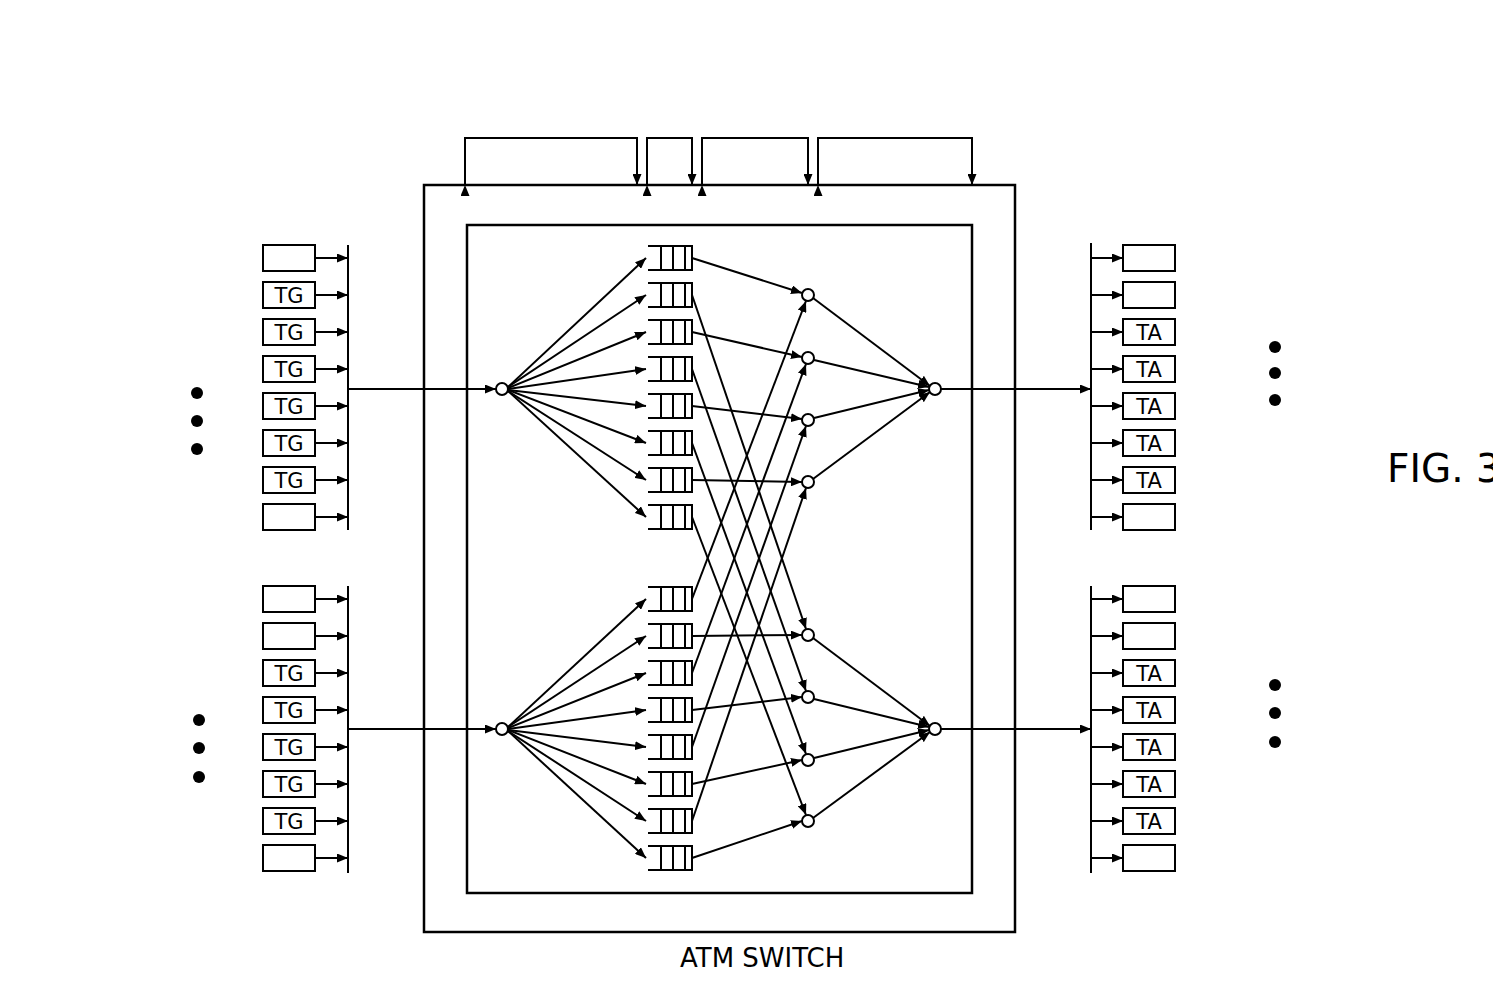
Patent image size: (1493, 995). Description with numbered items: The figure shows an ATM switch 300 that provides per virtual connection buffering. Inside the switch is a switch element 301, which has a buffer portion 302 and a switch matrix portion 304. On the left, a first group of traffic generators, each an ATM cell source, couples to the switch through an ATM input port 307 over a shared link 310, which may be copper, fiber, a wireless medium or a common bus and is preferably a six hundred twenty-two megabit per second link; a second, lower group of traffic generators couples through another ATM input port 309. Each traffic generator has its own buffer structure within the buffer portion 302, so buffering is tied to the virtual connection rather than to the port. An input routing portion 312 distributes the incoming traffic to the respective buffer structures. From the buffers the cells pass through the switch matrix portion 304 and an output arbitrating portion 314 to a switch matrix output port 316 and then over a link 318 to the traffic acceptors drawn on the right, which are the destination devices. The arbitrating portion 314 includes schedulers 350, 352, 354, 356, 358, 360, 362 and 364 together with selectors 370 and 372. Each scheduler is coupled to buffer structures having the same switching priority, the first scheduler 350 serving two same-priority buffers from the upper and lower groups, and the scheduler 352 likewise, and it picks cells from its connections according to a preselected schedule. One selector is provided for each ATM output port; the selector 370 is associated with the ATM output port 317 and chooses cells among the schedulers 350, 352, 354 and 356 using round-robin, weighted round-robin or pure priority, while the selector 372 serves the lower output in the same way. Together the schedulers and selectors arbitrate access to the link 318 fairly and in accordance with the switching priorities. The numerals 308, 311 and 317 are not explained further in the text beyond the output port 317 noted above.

The ATM switch 300 is at (493, 933).
The switch element 301 is at (973, 645).
The buffer portion 302 is at (663, 138).
The switch matrix portion 304 is at (722, 138).
The ATM input port 307 is at (422, 385).
The input link 308 is at (465, 385).
The ATM input port 309 is at (422, 726).
The link 310 is at (403, 393).
The input link 311 is at (465, 726).
The input routing portion 312 is at (533, 138).
The output arbitrating portion 314 is at (875, 138).
The switch matrix output port 316 is at (972, 378).
The ATM output port 317 is at (1017, 380).
The link 318 is at (1048, 386).
The scheduler 350 is at (815, 291).
The scheduler 352 is at (814, 356).
The scheduler 354 is at (814, 415).
The scheduler 356 is at (814, 489).
The scheduler 358 is at (815, 631).
The scheduler 360 is at (814, 695).
The scheduler 362 is at (814, 756).
The scheduler 364 is at (814, 826).
The selector 370 is at (936, 397).
The selector 372 is at (936, 737).